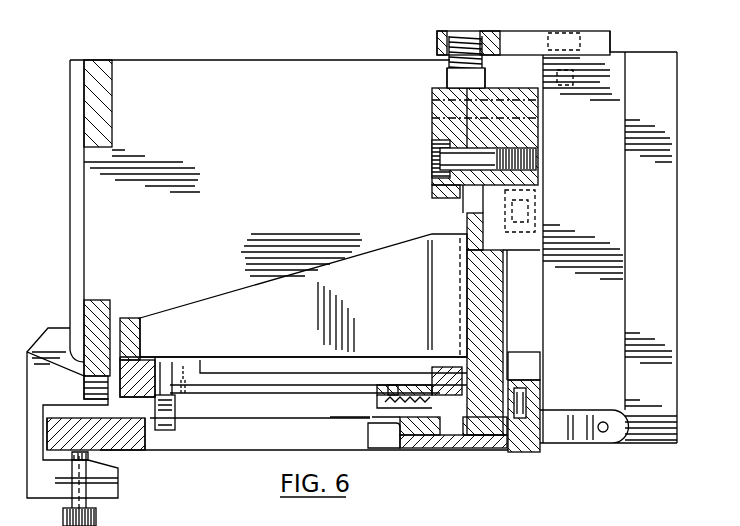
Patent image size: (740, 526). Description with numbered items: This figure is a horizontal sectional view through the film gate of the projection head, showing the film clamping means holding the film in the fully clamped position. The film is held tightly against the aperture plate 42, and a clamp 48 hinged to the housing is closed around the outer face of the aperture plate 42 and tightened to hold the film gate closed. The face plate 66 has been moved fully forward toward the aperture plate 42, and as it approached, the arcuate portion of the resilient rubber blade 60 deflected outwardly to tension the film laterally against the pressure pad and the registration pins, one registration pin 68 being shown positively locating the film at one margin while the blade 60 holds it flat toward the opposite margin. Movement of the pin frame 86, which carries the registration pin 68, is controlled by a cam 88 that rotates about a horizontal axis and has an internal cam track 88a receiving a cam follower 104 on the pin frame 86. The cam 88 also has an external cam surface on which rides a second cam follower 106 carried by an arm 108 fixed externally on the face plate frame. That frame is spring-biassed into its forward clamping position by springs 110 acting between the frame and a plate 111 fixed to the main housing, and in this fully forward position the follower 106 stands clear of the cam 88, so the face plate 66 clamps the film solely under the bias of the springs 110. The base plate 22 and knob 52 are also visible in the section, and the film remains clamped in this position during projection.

The base plate 22 is at (259, 421).
The aperture plate 42 is at (437, 447).
The clamp 48 is at (23, 478).
The knob 52 is at (378, 447).
The blade 60 is at (393, 385).
The face plate 66 is at (386, 392).
The registration pin 68 is at (164, 451).
The pin frame 86 is at (197, 298).
The cam 88 is at (540, 322).
The internal cam track 88a is at (525, 453).
The cam follower 104 is at (528, 396).
The cam follower 106 is at (528, 200).
The arm 108 is at (538, 130).
The spring 110 is at (437, 76).
The plate 111 is at (522, 46).